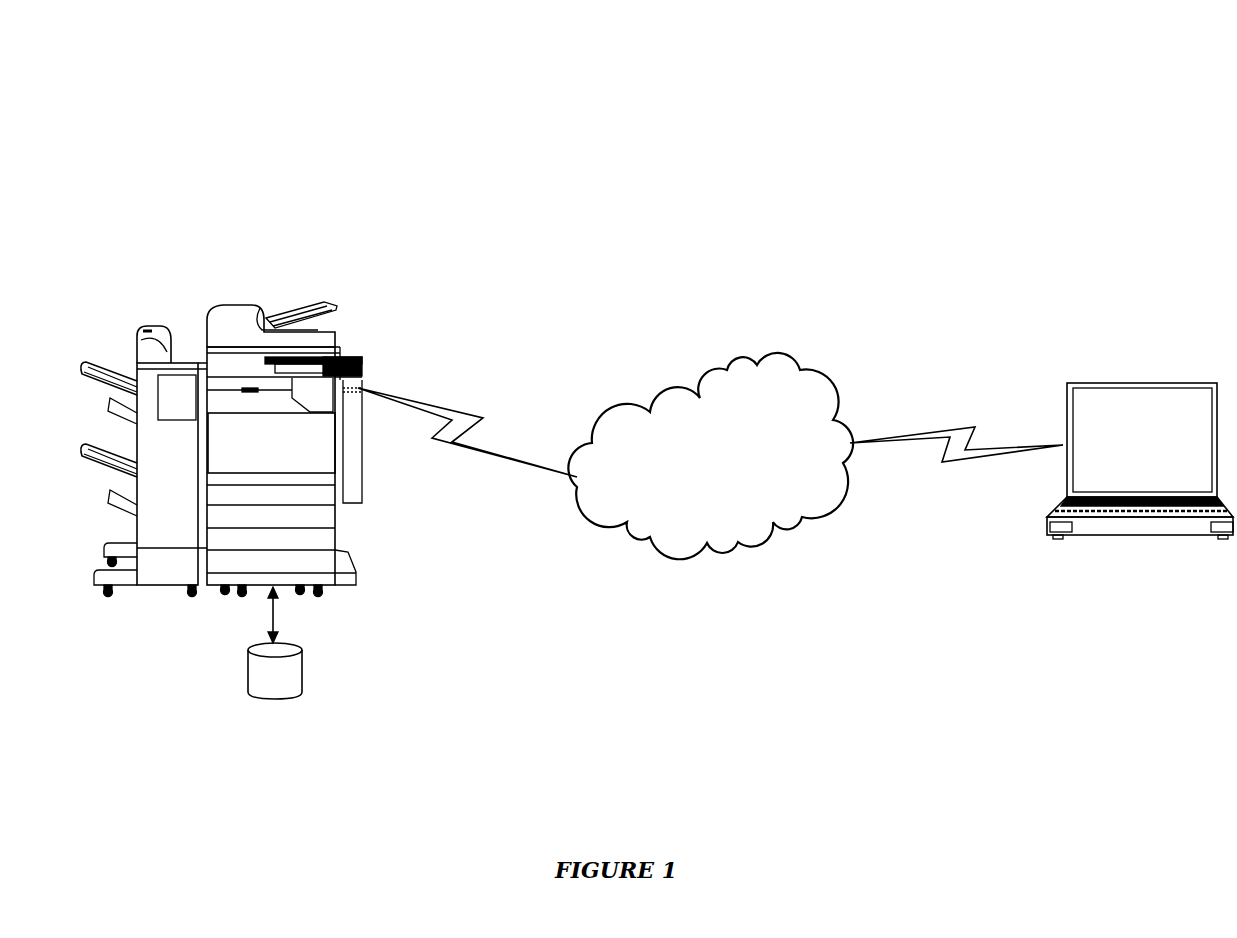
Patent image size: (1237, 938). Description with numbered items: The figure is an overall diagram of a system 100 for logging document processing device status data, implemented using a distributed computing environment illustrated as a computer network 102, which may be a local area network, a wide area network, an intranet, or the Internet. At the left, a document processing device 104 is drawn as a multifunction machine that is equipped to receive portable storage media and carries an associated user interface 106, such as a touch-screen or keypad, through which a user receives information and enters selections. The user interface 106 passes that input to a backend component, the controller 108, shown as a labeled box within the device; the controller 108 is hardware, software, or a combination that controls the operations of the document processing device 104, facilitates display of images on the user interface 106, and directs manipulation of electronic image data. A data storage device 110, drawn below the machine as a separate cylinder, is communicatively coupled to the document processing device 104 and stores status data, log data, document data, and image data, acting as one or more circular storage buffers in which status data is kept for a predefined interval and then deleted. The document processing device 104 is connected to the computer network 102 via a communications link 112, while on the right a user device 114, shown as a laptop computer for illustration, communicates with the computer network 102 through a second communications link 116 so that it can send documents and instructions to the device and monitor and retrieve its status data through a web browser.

The system 100 is at (913, 62).
The computer network 102 is at (780, 350).
The document processing device 104 is at (224, 314).
The user interface 106 is at (361, 364).
The controller 108 is at (330, 449).
The data storage device 110 is at (302, 652).
The communications link 112 is at (477, 413).
The user device 114 is at (1108, 383).
The communications link 116 is at (938, 429).